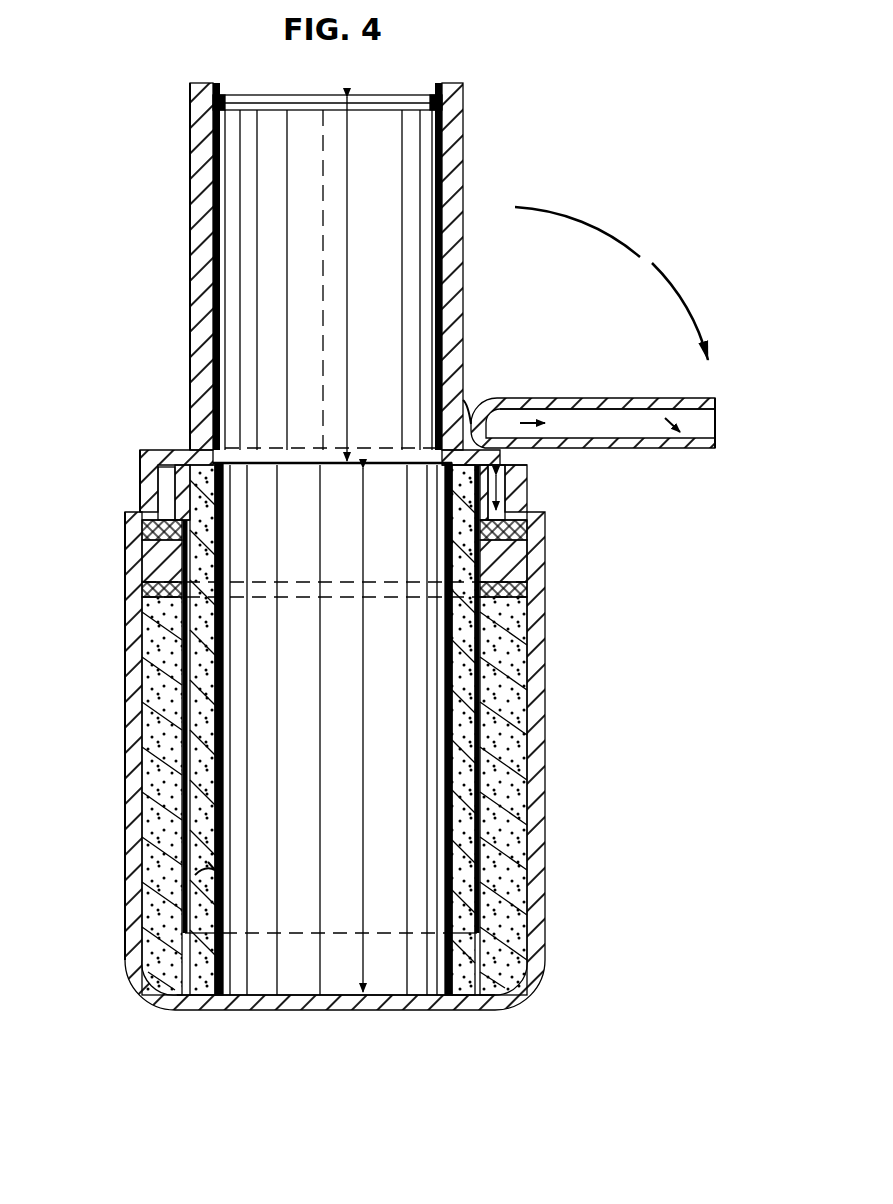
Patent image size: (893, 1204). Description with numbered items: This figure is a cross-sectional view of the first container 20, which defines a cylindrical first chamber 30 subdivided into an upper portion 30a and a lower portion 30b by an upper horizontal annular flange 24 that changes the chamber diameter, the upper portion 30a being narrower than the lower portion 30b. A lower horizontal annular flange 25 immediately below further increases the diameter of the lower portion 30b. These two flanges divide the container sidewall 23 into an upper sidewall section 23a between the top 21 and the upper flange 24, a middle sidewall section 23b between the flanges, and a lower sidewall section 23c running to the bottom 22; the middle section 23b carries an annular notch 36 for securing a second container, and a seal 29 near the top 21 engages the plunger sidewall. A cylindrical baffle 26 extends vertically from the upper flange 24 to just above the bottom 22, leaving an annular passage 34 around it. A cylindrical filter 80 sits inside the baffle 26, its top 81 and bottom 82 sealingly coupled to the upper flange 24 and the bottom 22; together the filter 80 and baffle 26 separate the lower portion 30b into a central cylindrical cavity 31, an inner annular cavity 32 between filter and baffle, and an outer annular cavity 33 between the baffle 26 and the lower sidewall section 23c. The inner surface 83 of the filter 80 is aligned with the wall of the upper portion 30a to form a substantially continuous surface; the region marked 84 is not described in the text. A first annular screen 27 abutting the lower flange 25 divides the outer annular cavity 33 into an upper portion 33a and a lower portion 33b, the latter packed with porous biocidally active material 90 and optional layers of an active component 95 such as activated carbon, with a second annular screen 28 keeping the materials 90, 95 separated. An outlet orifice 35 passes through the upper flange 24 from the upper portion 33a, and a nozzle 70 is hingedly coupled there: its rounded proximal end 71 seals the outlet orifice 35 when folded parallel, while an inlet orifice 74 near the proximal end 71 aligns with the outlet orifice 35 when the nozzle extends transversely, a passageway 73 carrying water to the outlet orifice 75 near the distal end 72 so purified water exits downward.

The first container 20 is at (137, 124).
The top 21 is at (445, 84).
The bottom 22 is at (330, 1006).
The container sidewall 23 is at (190, 263).
The upper sidewall section 23a is at (190, 188).
The middle sidewall section 23b is at (150, 462).
The lower sidewall section 23c is at (125, 928).
The upper horizontal annular flange 24 is at (165, 450).
The lower horizontal annular flange 25 is at (140, 510).
The cylindrical baffle 26 is at (222, 795).
The first annular screen 27 is at (150, 572).
The second annular screen 28 is at (535, 592).
The seal 29 is at (460, 104).
The first chamber 30 is at (394, 407).
The upper portion of first chamber 30a is at (355, 279).
The lower portion of first chamber 30b is at (367, 730).
The central cylindrical cavity 31 is at (311, 551).
The inner annular cavity 32 is at (535, 848).
The outer annular cavity 33 is at (165, 678).
The upper portion of outer annular cavity 33a is at (158, 470).
The lower portion of outer annular cavity 33b is at (180, 874).
The annular passage 34 is at (440, 966).
The outlet orifice 35 is at (505, 462).
The annular notch 36 is at (520, 492).
The nozzle 70 is at (569, 397).
The proximal end of nozzle 71 is at (473, 400).
The distal end of nozzle 72 is at (716, 430).
The passageway 73 is at (607, 410).
The nozzle inlet orifice 74 is at (502, 410).
The nozzle outlet orifice 75 is at (690, 450).
The filter 80 is at (226, 966).
The top of filter 81 is at (205, 465).
The bottom of filter 82 is at (208, 1000).
The inner surface of filter 83 is at (465, 802).
The insulation fold 84 is at (192, 852).
The porous biocidally active material 90 is at (160, 760).
The active component 95 is at (150, 596).